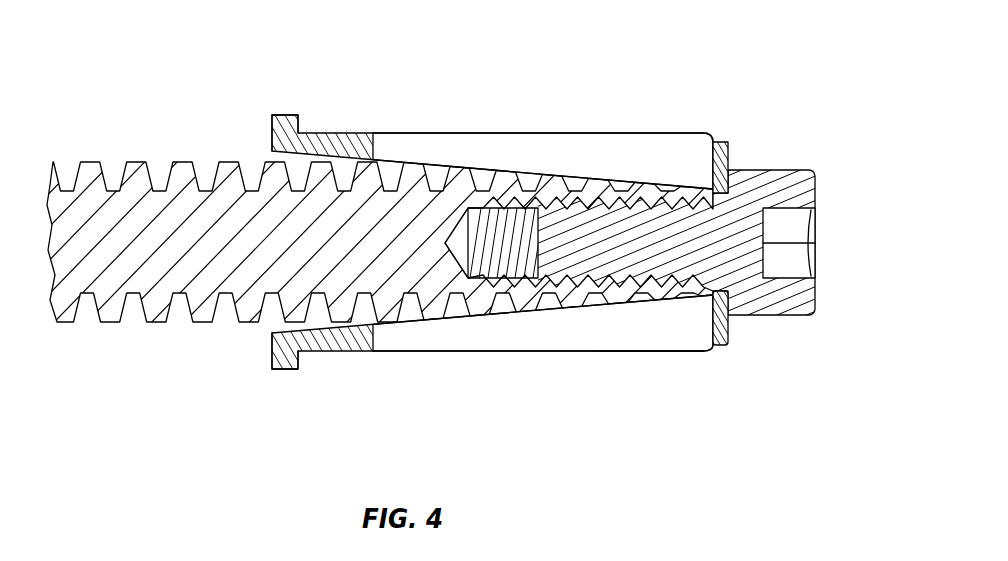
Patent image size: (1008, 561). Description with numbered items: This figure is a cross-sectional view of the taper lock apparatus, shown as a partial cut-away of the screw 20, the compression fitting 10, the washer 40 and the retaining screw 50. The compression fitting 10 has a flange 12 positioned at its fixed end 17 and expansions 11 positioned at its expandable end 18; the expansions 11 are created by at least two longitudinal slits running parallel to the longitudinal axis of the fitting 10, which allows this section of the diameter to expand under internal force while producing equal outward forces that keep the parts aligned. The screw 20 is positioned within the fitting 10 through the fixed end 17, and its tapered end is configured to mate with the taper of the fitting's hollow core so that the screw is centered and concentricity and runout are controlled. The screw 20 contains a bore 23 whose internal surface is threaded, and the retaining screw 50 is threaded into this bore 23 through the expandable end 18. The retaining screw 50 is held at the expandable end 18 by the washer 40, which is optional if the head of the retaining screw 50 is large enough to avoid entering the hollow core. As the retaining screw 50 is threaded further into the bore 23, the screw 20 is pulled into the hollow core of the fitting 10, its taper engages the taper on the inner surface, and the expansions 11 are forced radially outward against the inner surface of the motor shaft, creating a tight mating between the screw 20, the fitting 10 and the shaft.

The compression fitting 10 is at (547, 133).
The expansions 11 is at (673, 158).
The flange 12 is at (292, 114).
The fixed end 17 is at (277, 372).
The expandable end 18 is at (684, 375).
The screw 20 is at (183, 160).
The bore 23 is at (487, 245).
The washer 40 is at (729, 333).
The retaining screw 50 is at (770, 297).